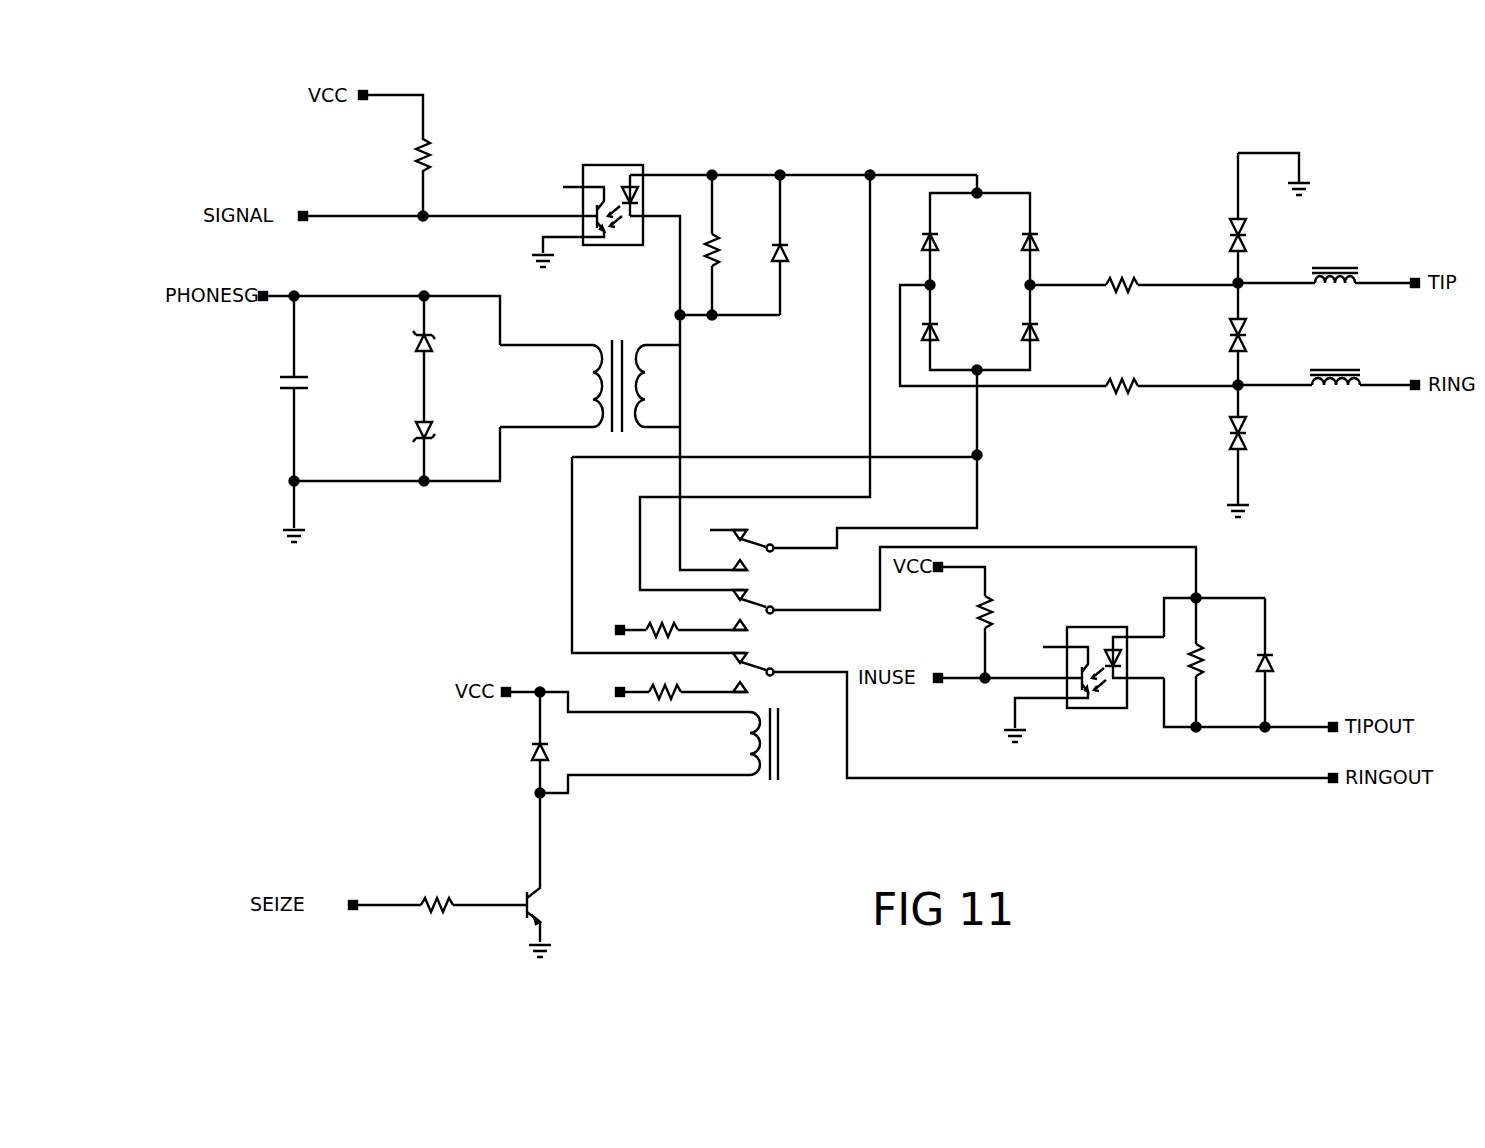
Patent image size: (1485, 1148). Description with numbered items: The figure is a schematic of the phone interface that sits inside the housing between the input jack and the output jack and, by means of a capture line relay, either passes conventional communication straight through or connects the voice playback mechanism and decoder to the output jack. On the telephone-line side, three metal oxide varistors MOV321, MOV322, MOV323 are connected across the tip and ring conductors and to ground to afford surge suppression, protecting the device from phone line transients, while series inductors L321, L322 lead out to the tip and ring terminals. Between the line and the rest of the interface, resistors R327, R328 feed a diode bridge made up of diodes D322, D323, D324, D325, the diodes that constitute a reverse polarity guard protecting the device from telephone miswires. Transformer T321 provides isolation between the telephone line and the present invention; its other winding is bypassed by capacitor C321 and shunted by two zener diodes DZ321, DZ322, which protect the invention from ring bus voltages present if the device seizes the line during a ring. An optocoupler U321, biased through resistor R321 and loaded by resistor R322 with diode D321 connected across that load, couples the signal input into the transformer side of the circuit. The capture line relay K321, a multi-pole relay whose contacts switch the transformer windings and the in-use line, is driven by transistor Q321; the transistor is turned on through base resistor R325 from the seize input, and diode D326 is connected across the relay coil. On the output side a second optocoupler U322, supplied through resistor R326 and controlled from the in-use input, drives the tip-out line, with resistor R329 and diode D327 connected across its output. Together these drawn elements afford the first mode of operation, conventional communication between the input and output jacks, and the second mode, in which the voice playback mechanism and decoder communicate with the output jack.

The resistor 5.6K R321 is at (452, 160).
The optocoupler H11A2 U321 is at (587, 192).
The resistor 1K R322 is at (736, 245).
The diode 1N914 D321 is at (811, 245).
The transformer T321 is at (590, 375).
The capacitor 0.047UF C321 is at (247, 388).
The zener diode DZ321 is at (458, 359).
The zener diode DZ322 is at (378, 448).
The reverse polarity guard diode D322 is at (968, 232).
The reverse polarity guard diode D323 is at (1068, 232).
The reverse polarity guard diode D324 is at (968, 323).
The reverse polarity guard diode D325 is at (1072, 326).
The resistor 20K R327 is at (1147, 266).
The resistor 20R R328 is at (1119, 413).
The metal oxide varistor MOV321 is at (1281, 234).
The metal oxide varistor MOV322 is at (1190, 337).
The metal oxide varistor MOV323 is at (1281, 449).
The inductor 10UH L321 is at (1326, 301).
The inductor 10UH L322 is at (1326, 402).
The capture line relay K321 is at (672, 648).
The diode 1N914 D326 is at (497, 742).
The transistor 2N3904 Q321 is at (576, 875).
The resistor 1K R325 is at (441, 881).
The resistor 5.6K R326 is at (952, 613).
The optocoupler H11A2 U322 is at (1084, 657).
The resistor 1K R329 is at (1219, 662).
The diode 1N914 D327 is at (1300, 662).